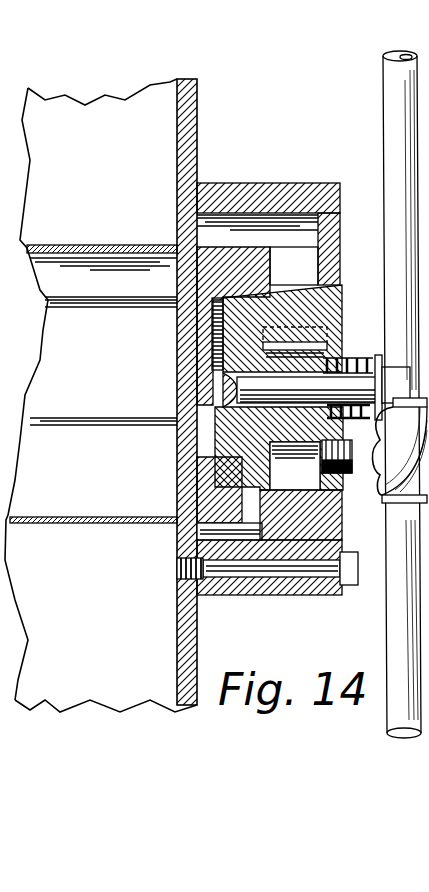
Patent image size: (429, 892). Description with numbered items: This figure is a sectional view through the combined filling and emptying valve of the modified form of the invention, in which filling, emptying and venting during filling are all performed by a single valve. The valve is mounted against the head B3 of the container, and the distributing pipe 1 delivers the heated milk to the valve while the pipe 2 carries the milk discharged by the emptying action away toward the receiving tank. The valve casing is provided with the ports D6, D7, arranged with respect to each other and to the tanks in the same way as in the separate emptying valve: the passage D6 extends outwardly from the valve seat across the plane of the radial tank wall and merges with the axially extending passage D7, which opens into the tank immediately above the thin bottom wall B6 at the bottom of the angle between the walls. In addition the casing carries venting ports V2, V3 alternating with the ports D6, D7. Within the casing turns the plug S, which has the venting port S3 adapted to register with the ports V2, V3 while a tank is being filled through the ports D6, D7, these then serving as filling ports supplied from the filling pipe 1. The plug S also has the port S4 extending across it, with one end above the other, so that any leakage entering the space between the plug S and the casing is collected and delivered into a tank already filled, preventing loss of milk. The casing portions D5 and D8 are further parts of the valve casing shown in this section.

The distributing pipe 1 is at (385, 243).
The pipe 2 is at (402, 525).
The plug S is at (330, 305).
The venting port S3 is at (267, 462).
The port S4 is at (322, 346).
The casing lower chamber D5 is at (283, 448).
The passage D6 is at (294, 266).
The axially extending passage D7 is at (257, 229).
The casing D8 is at (282, 183).
The head B3 is at (202, 623).
The inner or bottom wall B6 is at (110, 245).
The venting port V2 is at (242, 495).
The venting port V3 is at (177, 533).